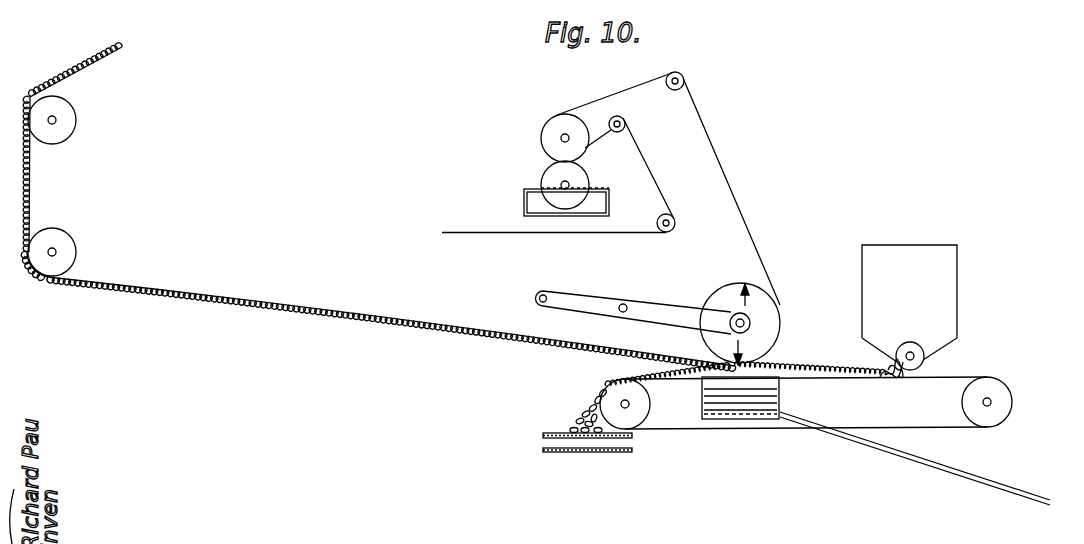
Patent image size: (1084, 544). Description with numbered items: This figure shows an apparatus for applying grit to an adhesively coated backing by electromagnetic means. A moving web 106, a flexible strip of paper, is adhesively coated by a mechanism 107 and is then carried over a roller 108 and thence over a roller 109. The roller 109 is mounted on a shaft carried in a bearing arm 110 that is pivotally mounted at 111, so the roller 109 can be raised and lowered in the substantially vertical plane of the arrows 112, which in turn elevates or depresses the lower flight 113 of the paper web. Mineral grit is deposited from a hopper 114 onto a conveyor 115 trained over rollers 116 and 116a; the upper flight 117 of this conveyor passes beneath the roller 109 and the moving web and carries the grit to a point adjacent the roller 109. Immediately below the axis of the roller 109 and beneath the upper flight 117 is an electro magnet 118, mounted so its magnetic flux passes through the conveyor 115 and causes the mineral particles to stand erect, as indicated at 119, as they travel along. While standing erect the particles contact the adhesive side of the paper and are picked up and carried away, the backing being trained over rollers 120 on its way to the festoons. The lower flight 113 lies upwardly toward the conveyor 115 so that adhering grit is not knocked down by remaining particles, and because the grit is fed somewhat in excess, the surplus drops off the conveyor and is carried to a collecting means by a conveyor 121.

The moving web 106 is at (478, 221).
The adhesive coating mechanism 107 is at (552, 159).
The roller 108 is at (686, 78).
The roller 109 is at (738, 287).
The bearing arm 110 is at (669, 308).
The pivot 111 is at (624, 303).
The arrows 112 is at (745, 342).
The lower flight of the paper web 113 is at (376, 318).
The hopper 114 is at (954, 300).
The conveyor 115 is at (942, 380).
The roller 116 is at (997, 422).
The roller 116a is at (606, 386).
The upper flight of the conveyor 117 is at (863, 380).
The electro magnet 118 is at (752, 405).
The erect mineral particles 119 is at (762, 363).
The rollers 120 is at (71, 141).
The conveyor 121 is at (545, 437).